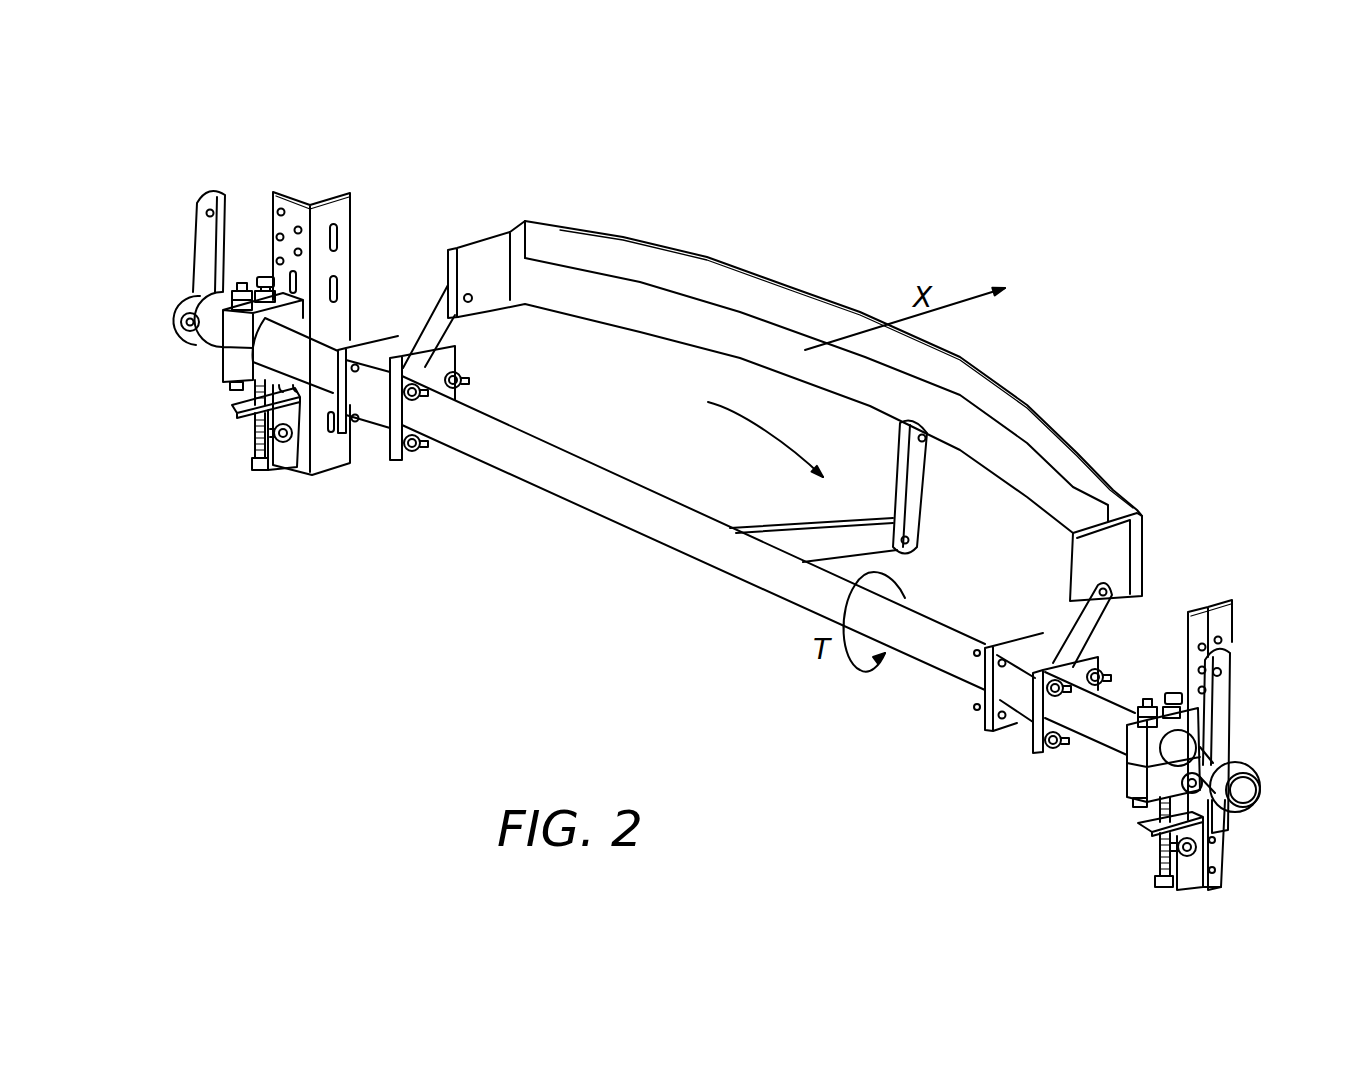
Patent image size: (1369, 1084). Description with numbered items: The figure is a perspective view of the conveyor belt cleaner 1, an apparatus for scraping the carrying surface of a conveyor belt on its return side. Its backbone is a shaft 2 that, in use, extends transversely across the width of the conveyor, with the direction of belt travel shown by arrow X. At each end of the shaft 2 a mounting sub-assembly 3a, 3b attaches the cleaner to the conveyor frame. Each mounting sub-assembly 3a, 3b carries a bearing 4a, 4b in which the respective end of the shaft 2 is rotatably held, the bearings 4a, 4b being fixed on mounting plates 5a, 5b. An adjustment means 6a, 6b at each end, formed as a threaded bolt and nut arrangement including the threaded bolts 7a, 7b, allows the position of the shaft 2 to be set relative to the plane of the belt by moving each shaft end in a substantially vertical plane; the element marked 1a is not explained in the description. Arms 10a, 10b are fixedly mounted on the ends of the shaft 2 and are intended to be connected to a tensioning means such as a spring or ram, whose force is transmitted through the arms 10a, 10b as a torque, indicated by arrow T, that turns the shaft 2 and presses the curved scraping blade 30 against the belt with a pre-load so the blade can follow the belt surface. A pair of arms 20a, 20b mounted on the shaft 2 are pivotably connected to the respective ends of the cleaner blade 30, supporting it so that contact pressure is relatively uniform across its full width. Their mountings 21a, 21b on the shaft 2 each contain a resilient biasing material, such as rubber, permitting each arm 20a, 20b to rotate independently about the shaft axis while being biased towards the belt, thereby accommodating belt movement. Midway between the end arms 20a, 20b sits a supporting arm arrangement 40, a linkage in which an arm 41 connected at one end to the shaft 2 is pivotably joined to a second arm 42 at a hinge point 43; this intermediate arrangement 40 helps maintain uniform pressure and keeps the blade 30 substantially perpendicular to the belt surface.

The conveyor belt cleaner 1 is at (1115, 303).
The table edge 1a is at (1120, 930).
The shaft 2 is at (670, 552).
The mounting sub-assembly 3a is at (1238, 600).
The mounting sub-assembly 3b is at (375, 190).
The bearing 4a is at (1132, 778).
The bearing 4b is at (223, 367).
The mounting plate 5a is at (1195, 620).
The mounting plate 5b is at (277, 197).
The adjustment means 6a is at (1143, 843).
The adjustment means 6b is at (243, 443).
The threaded bolt 7a is at (1157, 865).
The threaded bolt 7b is at (263, 463).
The arm 10a is at (1215, 700).
The arm 10b is at (205, 240).
The arm 20a is at (1063, 628).
The arm 20b is at (436, 340).
The mounting 21a is at (1013, 727).
The mounting 21b is at (370, 433).
The scraping blade 30 is at (800, 312).
The supporting arm arrangement 40 is at (744, 430).
The arm 41 is at (800, 537).
The arm 42 is at (913, 488).
The hinge point 43 is at (920, 543).